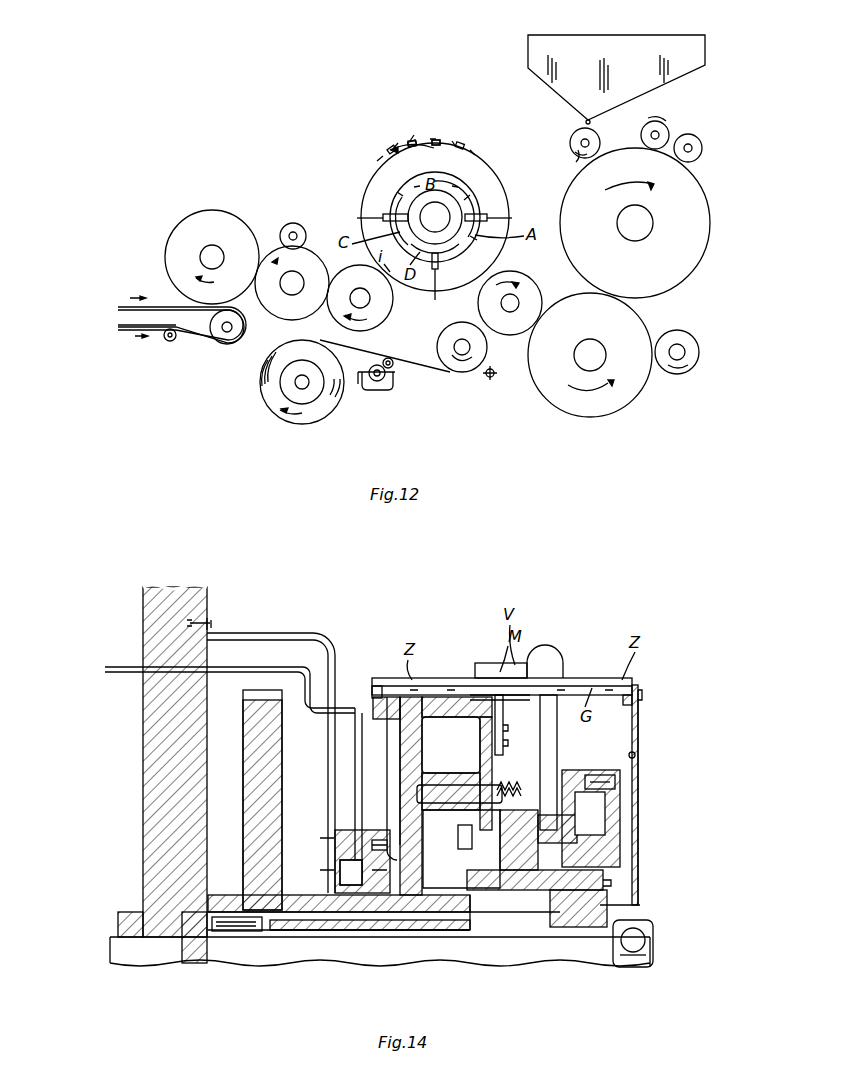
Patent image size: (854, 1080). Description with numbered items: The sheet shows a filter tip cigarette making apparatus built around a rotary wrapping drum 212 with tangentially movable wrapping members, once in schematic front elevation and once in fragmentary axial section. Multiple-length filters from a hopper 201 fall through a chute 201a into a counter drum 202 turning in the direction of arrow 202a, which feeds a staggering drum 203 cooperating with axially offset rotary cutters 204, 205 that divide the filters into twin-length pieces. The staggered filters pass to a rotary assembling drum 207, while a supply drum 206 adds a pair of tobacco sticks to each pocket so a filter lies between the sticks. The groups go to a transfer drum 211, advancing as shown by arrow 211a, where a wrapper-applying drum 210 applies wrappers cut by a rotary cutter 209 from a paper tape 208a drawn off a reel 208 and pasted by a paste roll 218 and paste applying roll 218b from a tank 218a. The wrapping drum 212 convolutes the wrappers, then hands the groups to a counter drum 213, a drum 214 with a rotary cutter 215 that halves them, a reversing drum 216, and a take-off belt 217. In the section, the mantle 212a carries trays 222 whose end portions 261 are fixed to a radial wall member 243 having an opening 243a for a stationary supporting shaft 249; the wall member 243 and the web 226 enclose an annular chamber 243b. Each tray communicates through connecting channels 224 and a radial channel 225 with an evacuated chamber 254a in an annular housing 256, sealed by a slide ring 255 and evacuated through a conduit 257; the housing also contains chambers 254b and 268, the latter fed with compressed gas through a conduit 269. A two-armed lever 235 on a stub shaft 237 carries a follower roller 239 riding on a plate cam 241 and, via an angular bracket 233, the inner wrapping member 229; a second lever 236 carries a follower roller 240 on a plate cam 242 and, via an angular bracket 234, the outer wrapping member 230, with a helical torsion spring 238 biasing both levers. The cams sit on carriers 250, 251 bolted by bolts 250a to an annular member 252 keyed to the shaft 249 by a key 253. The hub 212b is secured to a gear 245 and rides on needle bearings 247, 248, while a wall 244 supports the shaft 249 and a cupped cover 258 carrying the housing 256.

In FIG. 12, the hopper 201 is at (540, 60).
In FIG. 12, the chute 201a is at (584, 116).
In FIG. 12, the counter drum 202 is at (572, 141).
In FIG. 12, the arrow 202a is at (575, 152).
In FIG. 12, the staggering drum 203 is at (705, 228).
In FIG. 12, the rotary cutter 204 is at (662, 130).
In FIG. 12, the rotary cutter 205 is at (698, 158).
In FIG. 12, the supply drum 206 is at (683, 367).
In FIG. 12, the rotary assembling drum 207 is at (612, 416).
In FIG. 12, the reel 208 is at (262, 392).
In FIG. 12, the paper tape 208a is at (418, 360).
In FIG. 12, the rotary cutter 209 is at (478, 365).
In FIG. 12, the wrapper-applying drum 210 is at (470, 372).
In FIG. 12, the transfer drum 211 is at (520, 333).
In FIG. 12, the arrow 211a is at (508, 362).
In FIG. 12, the wrapping drum 212 is at (505, 178).
In FIG. 14, the wrapping drum 212 is at (358, 708).
In FIG. 14, the mantle 212a is at (372, 686).
In FIG. 14, the hub 212b is at (340, 912).
In FIG. 12, the counter drum 213 is at (372, 287).
In FIG. 12, the drum 214 is at (276, 310).
In FIG. 12, the rotary cutter 215 is at (278, 226).
In FIG. 12, the reversing drum 216 is at (208, 222).
In FIG. 12, the take-off belt 217 is at (125, 306).
In FIG. 12, the paste roll 218 is at (382, 380).
In FIG. 12, the tank 218a is at (360, 385).
In FIG. 12, the paste applying roll 218b is at (395, 368).
In FIG. 14, the tray 222 is at (640, 688).
In FIG. 14, the connecting channel 224 is at (430, 678).
In FIG. 14, the radial channel 225 is at (398, 785).
In FIG. 14, the web 226 is at (410, 935).
In FIG. 12, the wrapping member 229 is at (412, 140).
In FIG. 14, the wrapping member 229 is at (472, 688).
In FIG. 12, the wrapping member 230 is at (436, 138).
In FIG. 14, the wrapping member 230 is at (528, 668).
In FIG. 14, the angular bracket 233 is at (504, 740).
In FIG. 14, the angular bracket 234 is at (560, 665).
In FIG. 14, the two-armed lever 235 is at (478, 738).
In FIG. 14, the two-armed lever 236 is at (557, 735).
In FIG. 14, the stub shaft 237 is at (465, 785).
In FIG. 14, the helical torsion spring 238 is at (508, 800).
In FIG. 14, the follower roller 239 is at (468, 842).
In FIG. 14, the follower roller 240 is at (562, 843).
In FIG. 14, the plate cam 241 is at (475, 860).
In FIG. 14, the plate cam 242 is at (618, 808).
In FIG. 14, the radial wall member 243 is at (638, 728).
In FIG. 14, the concentric opening 243a is at (640, 908).
In FIG. 14, the annular chamber 243b is at (636, 756).
In FIG. 14, the wall 244 is at (143, 812).
In FIG. 14, the gear 245 is at (258, 802).
In FIG. 14, the needle bearing 247 is at (236, 915).
In FIG. 14, the needle bearing 248 is at (480, 935).
In FIG. 14, the stationary supporting shaft 249 is at (118, 950).
In FIG. 14, the carrier 250 is at (545, 870).
In FIG. 14, the bolt 250a is at (622, 895).
In FIG. 14, the carrier 251 is at (615, 805).
In FIG. 14, the annular member 252 is at (605, 890).
In FIG. 14, the key 253 is at (615, 955).
In FIG. 12, the evacuated chamber 254a is at (460, 192).
In FIG. 14, the evacuated chamber 254a is at (352, 865).
In FIG. 12, the chamber 254b is at (402, 200).
In FIG. 14, the slide ring 255 is at (380, 835).
In FIG. 12, the annular housing 256 is at (475, 240).
In FIG. 14, the annular housing 256 is at (352, 828).
In FIG. 12, the conduit 257 is at (360, 217).
In FIG. 14, the conduit 257 is at (122, 666).
In FIG. 14, the cupped cover 258 is at (265, 633).
In FIG. 14, the end portion 261 is at (642, 692).
In FIG. 12, the chamber 268 is at (440, 282).
In FIG. 12, the conduit 269 is at (431, 270).